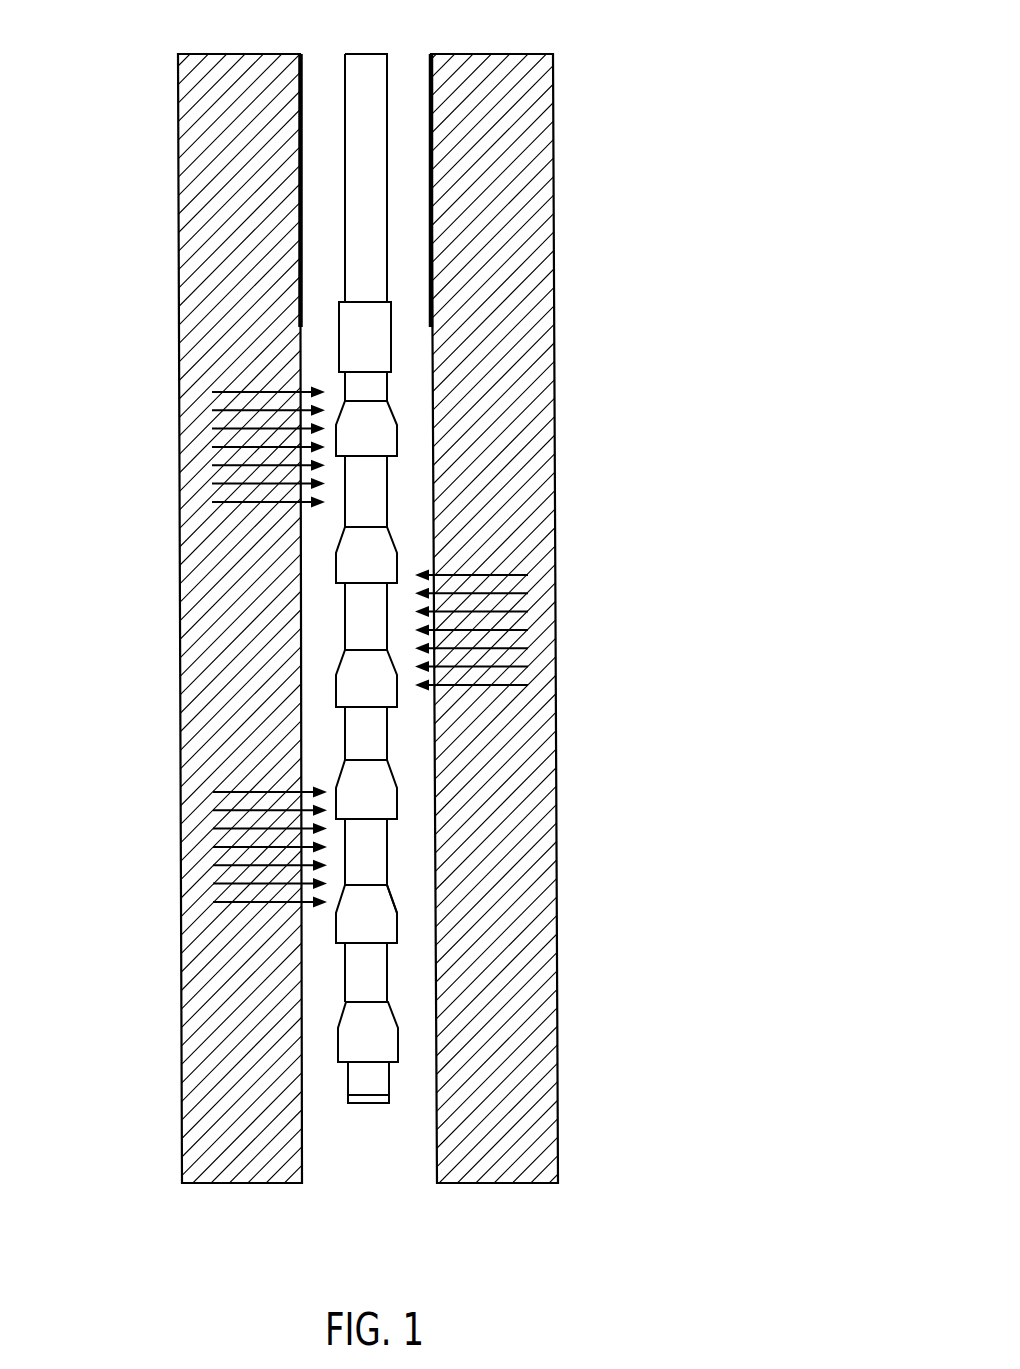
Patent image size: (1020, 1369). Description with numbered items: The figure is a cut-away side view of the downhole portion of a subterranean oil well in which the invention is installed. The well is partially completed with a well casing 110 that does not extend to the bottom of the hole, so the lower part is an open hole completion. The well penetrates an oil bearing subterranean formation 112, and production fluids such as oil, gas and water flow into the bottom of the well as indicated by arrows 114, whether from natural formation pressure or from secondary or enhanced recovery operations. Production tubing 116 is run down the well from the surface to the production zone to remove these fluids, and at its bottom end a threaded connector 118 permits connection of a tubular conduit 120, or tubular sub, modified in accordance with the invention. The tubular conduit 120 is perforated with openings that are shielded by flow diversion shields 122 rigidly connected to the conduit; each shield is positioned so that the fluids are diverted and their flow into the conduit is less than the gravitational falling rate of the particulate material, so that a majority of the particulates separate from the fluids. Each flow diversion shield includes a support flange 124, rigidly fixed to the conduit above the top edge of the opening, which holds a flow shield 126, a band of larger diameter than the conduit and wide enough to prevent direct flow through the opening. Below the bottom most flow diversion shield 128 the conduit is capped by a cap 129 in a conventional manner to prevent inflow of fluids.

The well casing 110 is at (300, 100).
The oil bearing subterranean formation 112 is at (182, 348).
The arrows 114 is at (212, 502).
The production tubing 116 is at (372, 80).
The threaded connector 118 is at (390, 313).
The tubular conduit 120 is at (388, 840).
The flow diversion shield 122 is at (410, 899).
The support flange 124 is at (340, 902).
The flow shield 126 is at (338, 937).
The bottom most flow diversion shield 128 is at (400, 1044).
The cap 129 is at (382, 1103).